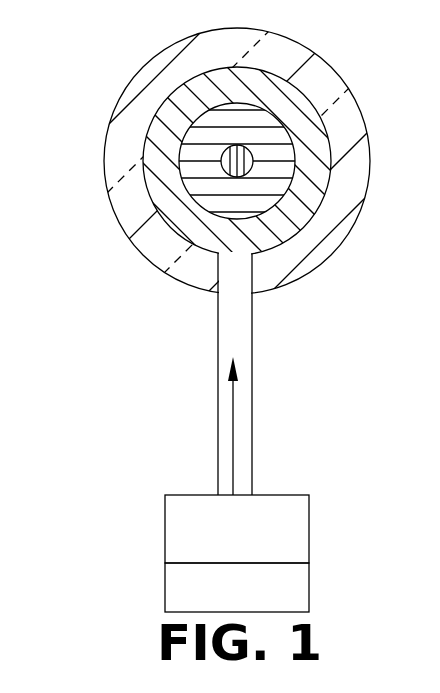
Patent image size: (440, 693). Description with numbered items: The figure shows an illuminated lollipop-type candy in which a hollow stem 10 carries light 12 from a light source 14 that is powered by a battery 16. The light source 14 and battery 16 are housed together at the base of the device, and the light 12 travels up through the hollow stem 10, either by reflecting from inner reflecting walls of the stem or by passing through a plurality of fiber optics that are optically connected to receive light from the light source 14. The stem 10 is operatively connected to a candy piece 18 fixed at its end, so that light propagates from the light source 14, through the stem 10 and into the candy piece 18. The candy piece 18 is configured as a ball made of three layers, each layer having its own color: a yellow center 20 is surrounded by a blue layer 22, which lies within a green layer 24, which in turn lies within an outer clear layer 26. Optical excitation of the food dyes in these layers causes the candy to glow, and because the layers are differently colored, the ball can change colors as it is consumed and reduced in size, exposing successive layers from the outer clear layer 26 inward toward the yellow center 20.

The hollow stem 10 is at (253, 342).
The light 12 is at (234, 447).
The light source 14 is at (310, 522).
The battery 16 is at (310, 585).
The candy piece 18 is at (245, 256).
The yellow center 20 is at (246, 146).
The blue layer 22 is at (272, 175).
The green layer 24 is at (343, 223).
The outer clear layer 26 is at (134, 233).